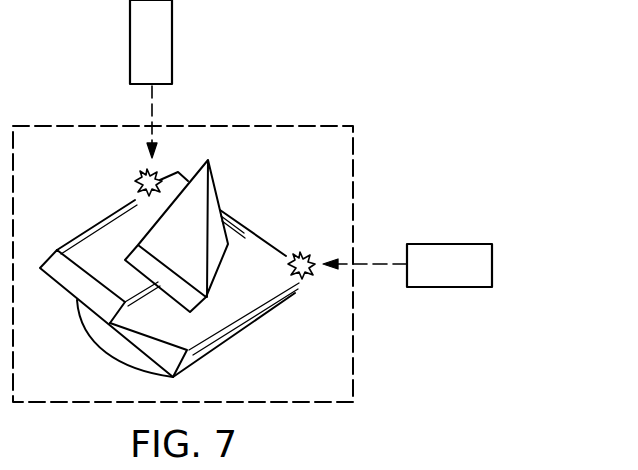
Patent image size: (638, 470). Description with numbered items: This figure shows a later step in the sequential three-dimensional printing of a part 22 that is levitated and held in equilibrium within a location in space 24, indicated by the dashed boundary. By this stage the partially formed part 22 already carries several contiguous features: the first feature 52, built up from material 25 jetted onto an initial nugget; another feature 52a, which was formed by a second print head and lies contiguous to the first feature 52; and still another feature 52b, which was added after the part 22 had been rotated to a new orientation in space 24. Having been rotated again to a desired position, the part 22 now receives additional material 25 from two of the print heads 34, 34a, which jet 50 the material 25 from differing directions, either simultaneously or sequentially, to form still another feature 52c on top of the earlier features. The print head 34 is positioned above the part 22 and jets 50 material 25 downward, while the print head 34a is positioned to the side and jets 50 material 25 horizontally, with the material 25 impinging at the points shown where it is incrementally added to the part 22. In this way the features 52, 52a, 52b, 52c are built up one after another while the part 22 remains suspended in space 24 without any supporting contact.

The part 22 is at (257, 135).
The space 24 is at (66, 118).
The material 25 is at (134, 182).
The 3-D printer head 34 is at (173, 42).
The print head 34a is at (448, 288).
The jetting 50 is at (150, 115).
The feature 52 is at (90, 248).
The feature 52a is at (212, 317).
The feature 52b is at (100, 335).
The feature 52c is at (216, 193).